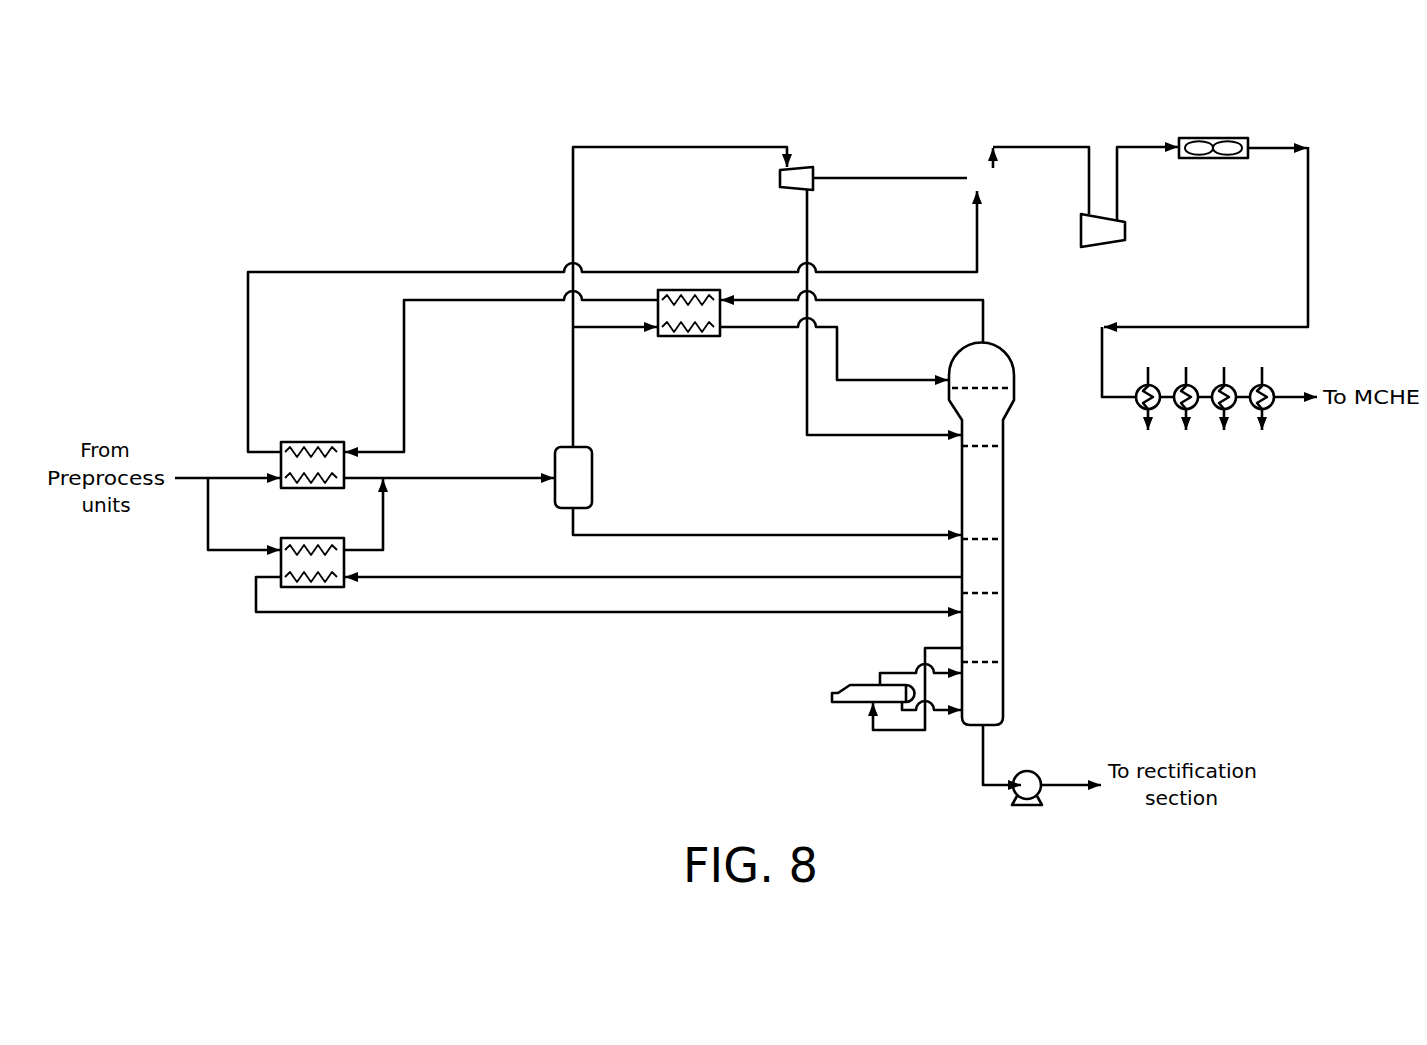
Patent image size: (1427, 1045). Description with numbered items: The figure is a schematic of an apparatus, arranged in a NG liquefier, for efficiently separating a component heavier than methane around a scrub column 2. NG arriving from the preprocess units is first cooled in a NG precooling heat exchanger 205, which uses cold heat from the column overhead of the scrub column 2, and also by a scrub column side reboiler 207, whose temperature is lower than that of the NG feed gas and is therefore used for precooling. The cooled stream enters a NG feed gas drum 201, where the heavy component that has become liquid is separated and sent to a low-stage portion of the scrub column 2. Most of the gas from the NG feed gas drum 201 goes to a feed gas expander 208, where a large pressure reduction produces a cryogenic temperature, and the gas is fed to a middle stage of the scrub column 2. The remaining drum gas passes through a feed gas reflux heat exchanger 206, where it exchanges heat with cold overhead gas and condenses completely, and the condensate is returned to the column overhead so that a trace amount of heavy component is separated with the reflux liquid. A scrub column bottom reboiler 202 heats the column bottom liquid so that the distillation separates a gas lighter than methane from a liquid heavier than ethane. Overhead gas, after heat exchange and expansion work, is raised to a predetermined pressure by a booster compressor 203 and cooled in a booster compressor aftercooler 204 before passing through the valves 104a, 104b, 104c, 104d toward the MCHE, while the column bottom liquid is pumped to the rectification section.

The scrub column 2 is at (1002, 347).
The NG feed gas drum 201 is at (593, 478).
The scrub column bottom reboiler 202 is at (862, 684).
The booster compressor 203 is at (1102, 246).
The booster compressor aftercooler 204 is at (1217, 137).
The NG precooling heat exchanger 205 is at (322, 424).
The feed gas reflux heat exchanger 206 is at (693, 337).
The scrub column side reboiler 207 is at (322, 520).
The feed gas expander 208 is at (807, 167).
The valve 104a is at (1139, 407).
The valve 104b is at (1178, 408).
The valve 104c is at (1231, 408).
The valve 104d is at (1272, 387).